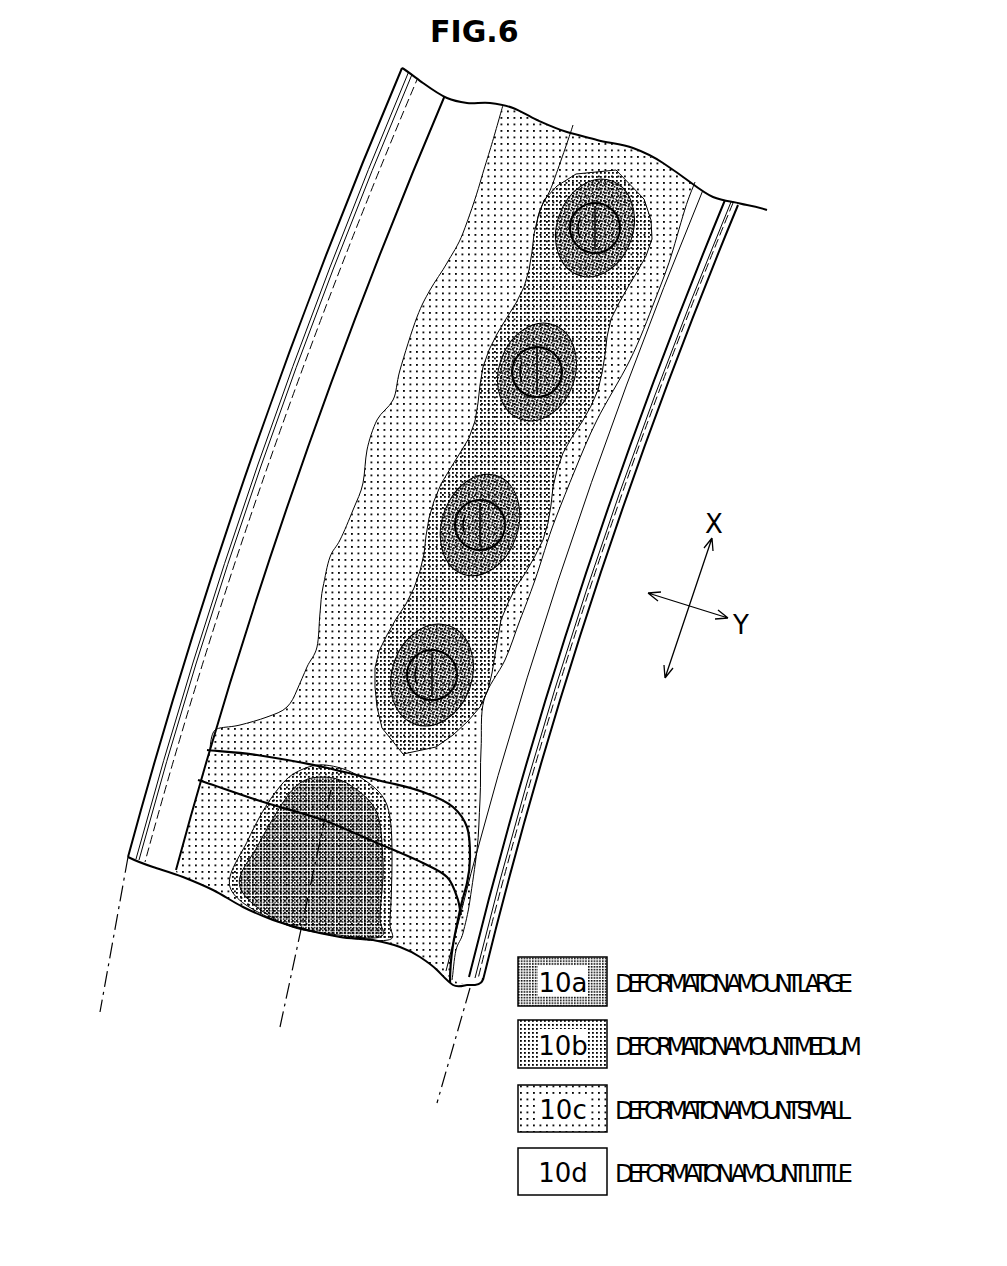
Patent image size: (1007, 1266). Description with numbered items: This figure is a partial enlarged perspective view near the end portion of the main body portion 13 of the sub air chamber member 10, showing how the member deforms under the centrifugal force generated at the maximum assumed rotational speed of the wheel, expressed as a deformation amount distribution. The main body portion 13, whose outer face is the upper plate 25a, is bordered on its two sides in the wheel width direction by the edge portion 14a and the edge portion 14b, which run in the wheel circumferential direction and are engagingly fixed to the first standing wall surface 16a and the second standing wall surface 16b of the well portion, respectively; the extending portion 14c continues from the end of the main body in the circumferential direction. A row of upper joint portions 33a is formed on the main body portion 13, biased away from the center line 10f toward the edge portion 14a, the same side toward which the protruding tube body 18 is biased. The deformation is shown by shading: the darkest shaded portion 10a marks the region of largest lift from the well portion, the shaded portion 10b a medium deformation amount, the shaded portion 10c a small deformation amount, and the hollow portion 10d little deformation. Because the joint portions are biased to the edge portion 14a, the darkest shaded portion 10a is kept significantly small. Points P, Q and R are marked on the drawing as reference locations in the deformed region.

The sub air chamber member 10 is at (255, 285).
The shaded portion 10a is at (373, 675).
The shaded portion 10b is at (463, 772).
The shaded portion 10c is at (420, 380).
The hollow portion 10d is at (337, 480).
The center line 10f is at (288, 983).
The main body portion 13 is at (448, 160).
The edge portion 14a is at (706, 291).
The edge portion 14b is at (341, 238).
The extending portion 14c is at (373, 940).
The first standing wall surface 16a is at (460, 1043).
The second standing wall surface 16b is at (120, 985).
The tube body 18 is at (497, 920).
The upper plate 25a is at (628, 362).
The upper joint portions 33a is at (645, 272).
The point P is at (320, 920).
The point Q is at (453, 595).
The point R is at (510, 447).